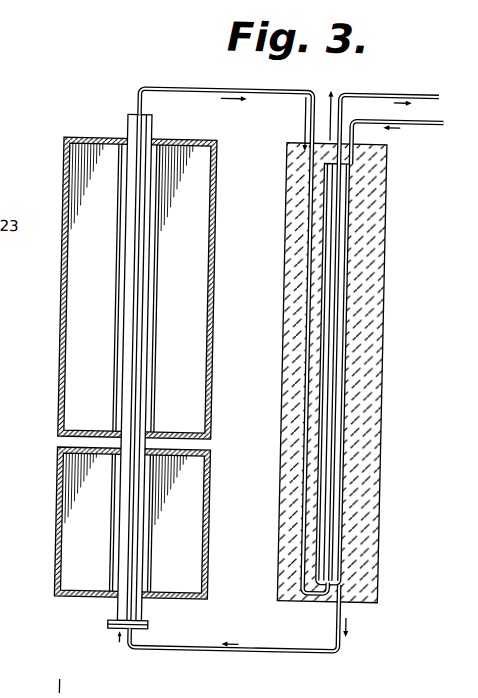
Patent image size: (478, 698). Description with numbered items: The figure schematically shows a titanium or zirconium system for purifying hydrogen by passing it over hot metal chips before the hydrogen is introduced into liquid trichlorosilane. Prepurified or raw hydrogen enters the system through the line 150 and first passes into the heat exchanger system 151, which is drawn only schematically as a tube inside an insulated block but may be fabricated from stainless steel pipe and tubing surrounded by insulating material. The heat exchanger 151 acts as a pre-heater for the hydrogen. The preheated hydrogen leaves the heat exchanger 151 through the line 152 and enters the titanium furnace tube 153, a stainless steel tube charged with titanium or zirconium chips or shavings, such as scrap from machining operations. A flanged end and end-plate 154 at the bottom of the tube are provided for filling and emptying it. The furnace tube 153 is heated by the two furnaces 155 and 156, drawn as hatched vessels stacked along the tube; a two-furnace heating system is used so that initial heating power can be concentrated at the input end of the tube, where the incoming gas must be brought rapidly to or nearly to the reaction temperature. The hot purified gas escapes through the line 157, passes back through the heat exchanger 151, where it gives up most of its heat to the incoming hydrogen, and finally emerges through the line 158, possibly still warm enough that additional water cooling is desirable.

The line 150 is at (421, 124).
The heat exchanger system 151 is at (354, 468).
The line 152 is at (250, 655).
The titanium furnace tube 153 is at (152, 619).
The flanged end and end-plate 154 is at (118, 630).
The furnace 155 is at (64, 528).
The furnace 156 is at (64, 309).
The line 157 is at (195, 89).
The line 158 is at (419, 88).